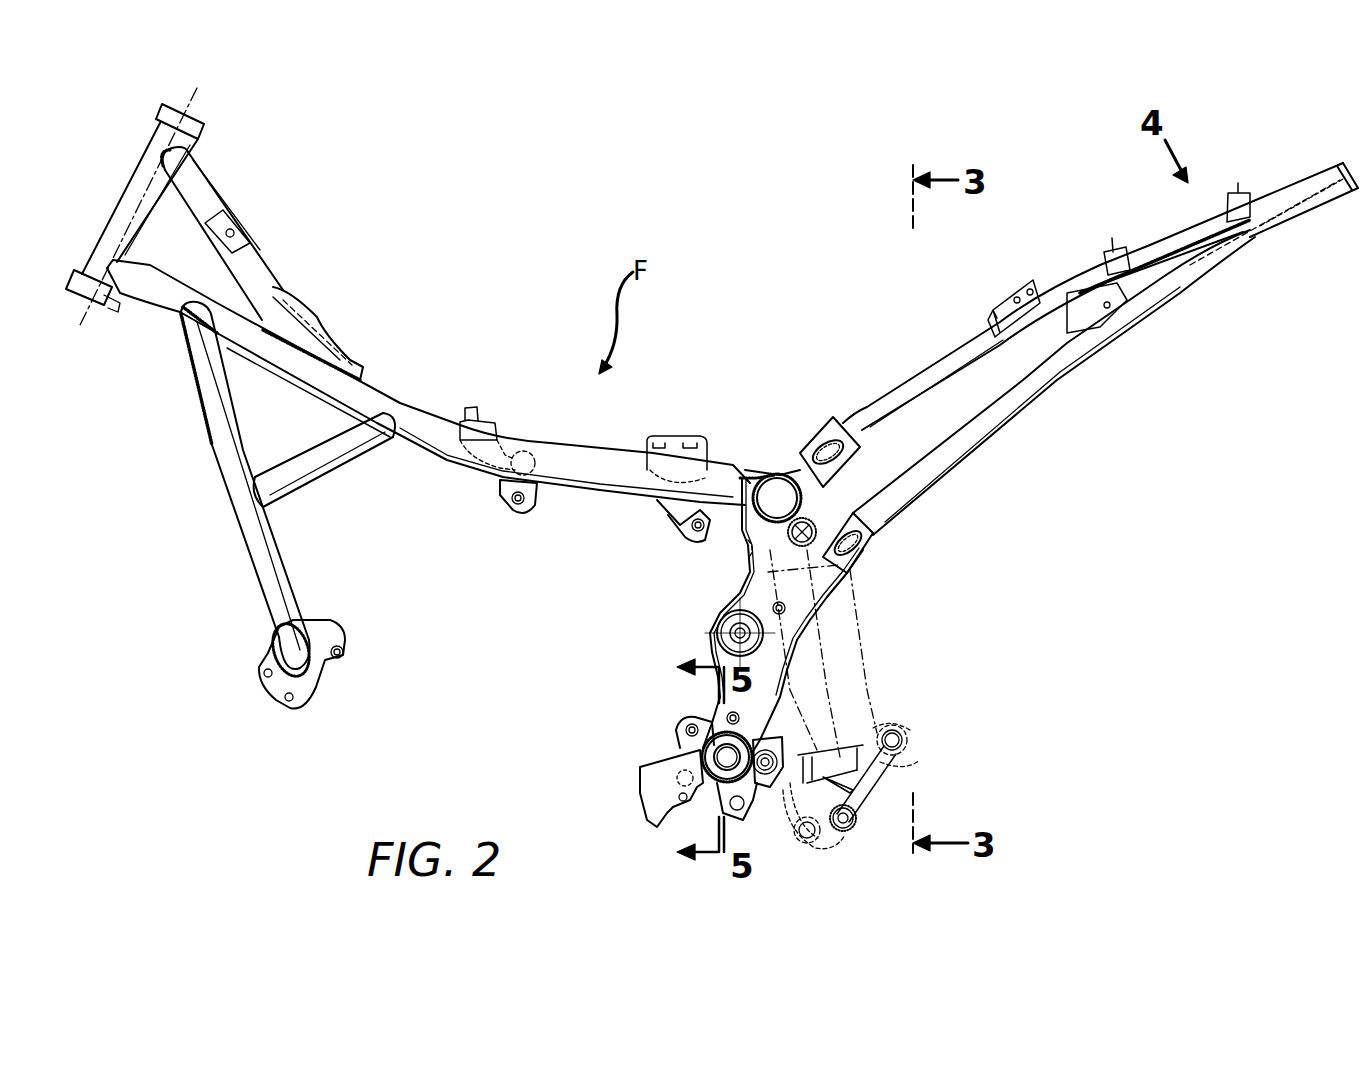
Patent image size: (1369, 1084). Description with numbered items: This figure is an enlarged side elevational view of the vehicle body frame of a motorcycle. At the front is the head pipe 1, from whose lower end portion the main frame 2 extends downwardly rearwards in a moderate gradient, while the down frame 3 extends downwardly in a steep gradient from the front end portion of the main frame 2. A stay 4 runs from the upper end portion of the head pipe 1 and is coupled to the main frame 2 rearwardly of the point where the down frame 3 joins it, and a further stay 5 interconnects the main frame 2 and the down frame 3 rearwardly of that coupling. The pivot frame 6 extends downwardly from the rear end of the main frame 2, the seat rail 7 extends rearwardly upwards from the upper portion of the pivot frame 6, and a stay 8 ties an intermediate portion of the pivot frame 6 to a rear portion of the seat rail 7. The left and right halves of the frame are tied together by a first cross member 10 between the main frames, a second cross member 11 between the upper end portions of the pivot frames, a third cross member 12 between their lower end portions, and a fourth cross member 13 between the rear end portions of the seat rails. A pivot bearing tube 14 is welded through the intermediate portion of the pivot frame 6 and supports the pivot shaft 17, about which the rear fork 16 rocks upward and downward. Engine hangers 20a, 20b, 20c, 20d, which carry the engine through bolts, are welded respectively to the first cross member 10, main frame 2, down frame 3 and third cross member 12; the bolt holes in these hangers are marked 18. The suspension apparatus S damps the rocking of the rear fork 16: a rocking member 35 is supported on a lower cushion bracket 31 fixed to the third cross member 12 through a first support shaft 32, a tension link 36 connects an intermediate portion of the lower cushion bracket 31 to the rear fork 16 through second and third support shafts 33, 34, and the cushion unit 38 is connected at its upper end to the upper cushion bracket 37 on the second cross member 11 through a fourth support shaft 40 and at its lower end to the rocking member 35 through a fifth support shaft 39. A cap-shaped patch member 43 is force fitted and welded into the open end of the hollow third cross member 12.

The head pipe 1 is at (118, 190).
The main frame 2 is at (430, 425).
The down frame 3 is at (245, 537).
The stay 4 is at (257, 263).
The stay 5 is at (330, 470).
The pivot frame 6 is at (795, 622).
The seat rail 7 is at (933, 360).
The stay 8 is at (1000, 428).
The first cross member 10 is at (527, 450).
The second cross member 11 is at (777, 476).
The third cross member 12 is at (708, 790).
The fourth cross member 13 is at (1280, 200).
The pivot bearing tube 14 is at (717, 650).
The rear fork 16 is at (915, 742).
The pivot shaft 17 is at (725, 613).
The mounting hole 18 is at (338, 660).
The engine hanger 20a is at (503, 492).
The engine hanger 20b is at (660, 514).
The engine hanger 20c is at (327, 633).
The engine hanger 20d is at (690, 718).
The lower cushion bracket 31 is at (776, 750).
The first support shaft 32 is at (758, 718).
The second support shaft 33 is at (808, 843).
The third support shaft 34 is at (915, 767).
The rocking member 35 is at (778, 842).
The tension link 36 is at (867, 800).
The upper cushion bracket 37 is at (742, 549).
The cushion unit 38 is at (872, 665).
The fifth support shaft 39 is at (845, 833).
The fourth support shaft 40 is at (815, 536).
The patch member 43 is at (657, 768).
The suspension apparatus S is at (885, 838).